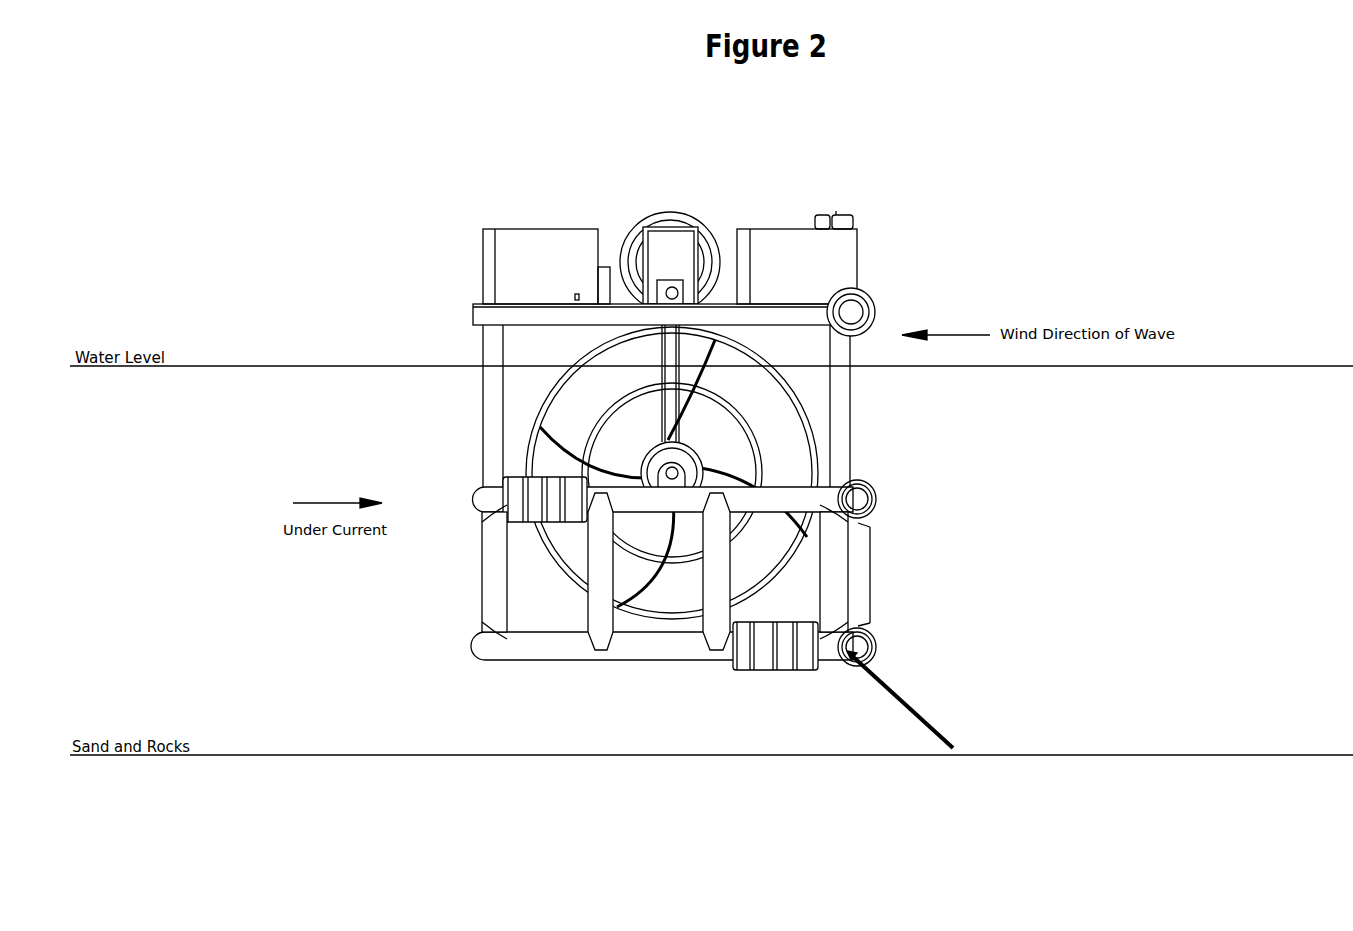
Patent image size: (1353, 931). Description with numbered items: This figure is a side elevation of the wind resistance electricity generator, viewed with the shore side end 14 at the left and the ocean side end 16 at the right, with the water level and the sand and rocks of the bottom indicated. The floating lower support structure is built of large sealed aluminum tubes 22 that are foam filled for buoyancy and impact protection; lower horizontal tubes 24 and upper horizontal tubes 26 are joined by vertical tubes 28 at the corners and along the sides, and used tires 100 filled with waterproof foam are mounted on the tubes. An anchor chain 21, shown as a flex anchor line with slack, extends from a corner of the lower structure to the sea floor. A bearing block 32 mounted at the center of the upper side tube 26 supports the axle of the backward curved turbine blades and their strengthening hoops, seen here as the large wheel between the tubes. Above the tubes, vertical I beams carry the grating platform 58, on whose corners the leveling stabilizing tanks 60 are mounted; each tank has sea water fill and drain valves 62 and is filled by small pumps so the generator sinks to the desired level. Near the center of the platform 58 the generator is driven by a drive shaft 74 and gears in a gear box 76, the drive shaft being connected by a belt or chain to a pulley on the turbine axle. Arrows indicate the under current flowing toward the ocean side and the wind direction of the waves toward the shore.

The end 14 is at (222, 196).
The end 16 is at (1256, 209).
The gear box 76 is at (673, 278).
The drive shaft 74 is at (683, 284).
The leveling stabilizing tank 60 is at (857, 237).
The fill and drain valve 62 is at (858, 285).
The grating platform 58 is at (856, 300).
The bearing block 32 is at (695, 470).
The upper horizontal tube 26 is at (476, 493).
The vertical tube 28 is at (481, 571).
The lower horizontal tube 24 is at (476, 642).
The aluminum tube 22 is at (870, 562).
The used tire 100 is at (780, 672).
The anchor chain 21 is at (883, 702).